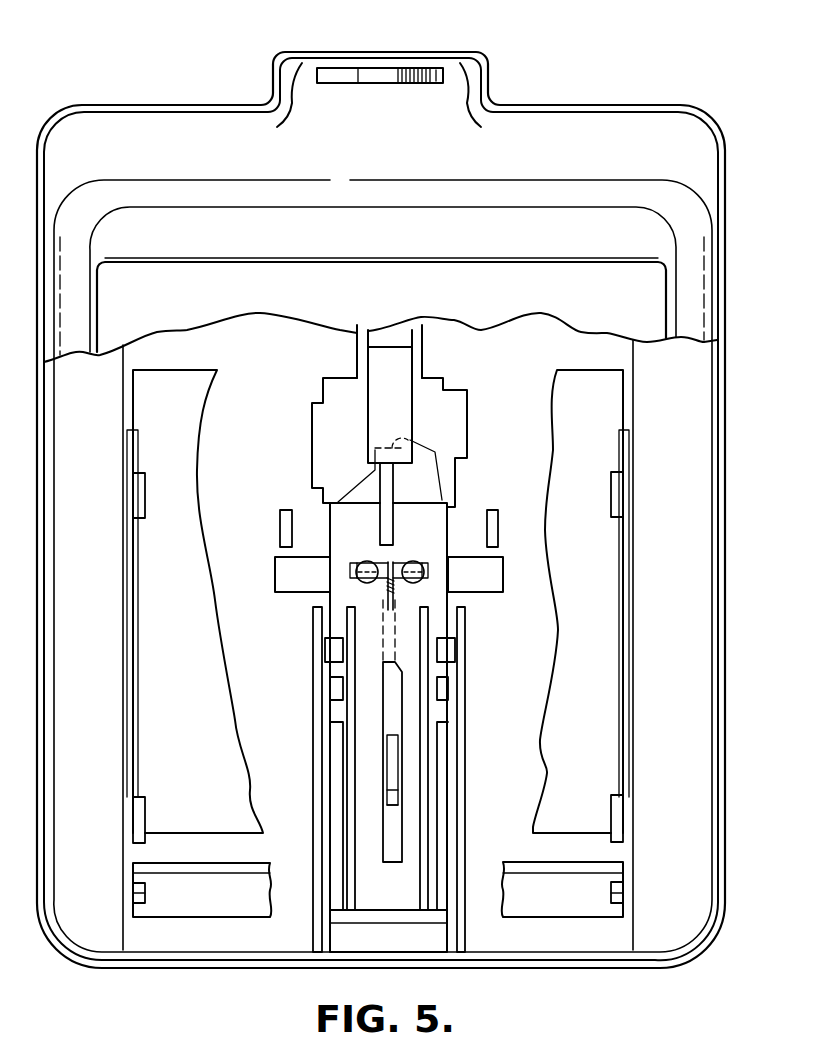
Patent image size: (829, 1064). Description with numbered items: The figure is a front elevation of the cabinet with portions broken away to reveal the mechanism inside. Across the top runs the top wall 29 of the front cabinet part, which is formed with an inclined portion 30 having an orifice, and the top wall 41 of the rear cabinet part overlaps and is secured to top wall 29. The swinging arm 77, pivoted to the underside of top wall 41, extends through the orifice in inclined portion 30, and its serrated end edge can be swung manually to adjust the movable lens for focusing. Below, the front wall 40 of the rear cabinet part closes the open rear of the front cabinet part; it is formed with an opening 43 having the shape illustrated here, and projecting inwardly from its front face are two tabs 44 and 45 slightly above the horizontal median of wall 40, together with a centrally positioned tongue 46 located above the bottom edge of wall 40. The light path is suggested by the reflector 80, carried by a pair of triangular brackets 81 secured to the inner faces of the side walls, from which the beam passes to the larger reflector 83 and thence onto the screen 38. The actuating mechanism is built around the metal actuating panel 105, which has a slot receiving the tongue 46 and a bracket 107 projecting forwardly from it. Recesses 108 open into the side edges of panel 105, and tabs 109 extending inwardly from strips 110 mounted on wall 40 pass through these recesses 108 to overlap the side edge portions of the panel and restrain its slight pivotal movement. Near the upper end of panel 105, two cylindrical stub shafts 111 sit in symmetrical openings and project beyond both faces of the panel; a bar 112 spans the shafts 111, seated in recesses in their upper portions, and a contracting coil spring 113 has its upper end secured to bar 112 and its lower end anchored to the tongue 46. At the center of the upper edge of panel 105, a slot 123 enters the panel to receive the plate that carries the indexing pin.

The top wall 29 is at (583, 128).
The inclined portion 30 is at (335, 70).
The screen 38 is at (396, 301).
The front wall 40 is at (528, 425).
The top wall 41 is at (694, 100).
The opening 43 is at (450, 414).
The tab 44 is at (280, 522).
The tab 45 is at (498, 530).
The tongue 46 is at (388, 737).
The swinging arm 77 is at (393, 73).
The reflector 80 is at (605, 867).
The triangular bracket 81 is at (628, 745).
The reflector 83 is at (598, 680).
The actuating panel 105 is at (398, 895).
The bracket 107 is at (407, 922).
The recess 108 is at (333, 700).
The tab 109 is at (325, 650).
The strip 110 is at (313, 755).
The stub shaft 111 is at (367, 561).
The bar 112 is at (413, 561).
The contracting coil spring 113 is at (390, 590).
The slot 123 is at (397, 505).